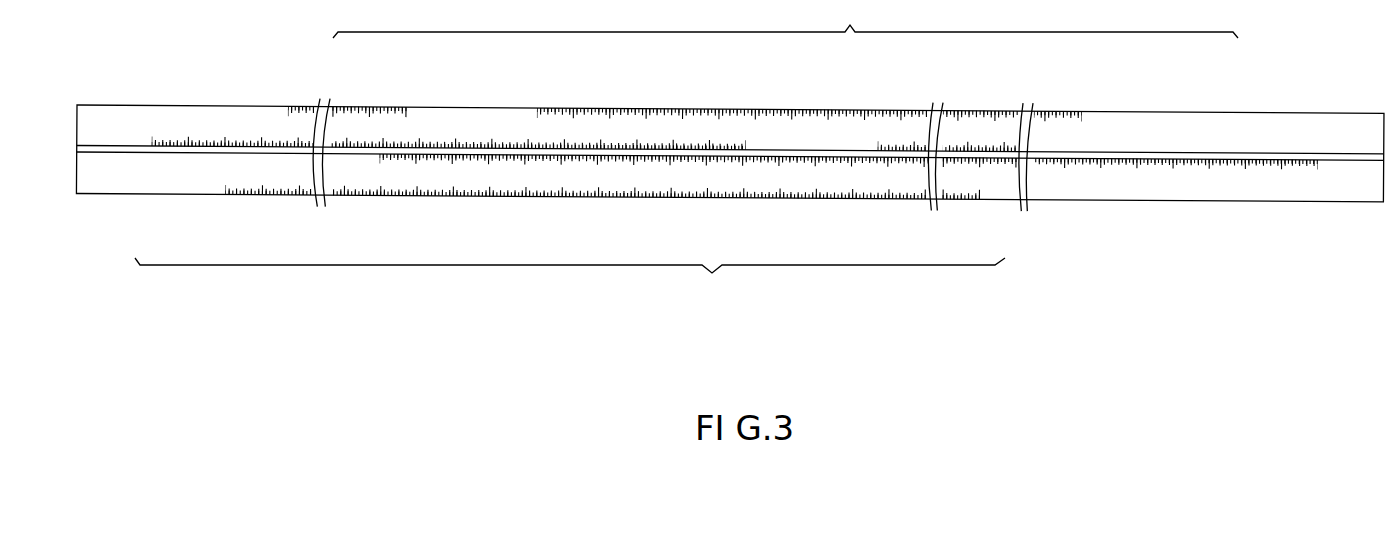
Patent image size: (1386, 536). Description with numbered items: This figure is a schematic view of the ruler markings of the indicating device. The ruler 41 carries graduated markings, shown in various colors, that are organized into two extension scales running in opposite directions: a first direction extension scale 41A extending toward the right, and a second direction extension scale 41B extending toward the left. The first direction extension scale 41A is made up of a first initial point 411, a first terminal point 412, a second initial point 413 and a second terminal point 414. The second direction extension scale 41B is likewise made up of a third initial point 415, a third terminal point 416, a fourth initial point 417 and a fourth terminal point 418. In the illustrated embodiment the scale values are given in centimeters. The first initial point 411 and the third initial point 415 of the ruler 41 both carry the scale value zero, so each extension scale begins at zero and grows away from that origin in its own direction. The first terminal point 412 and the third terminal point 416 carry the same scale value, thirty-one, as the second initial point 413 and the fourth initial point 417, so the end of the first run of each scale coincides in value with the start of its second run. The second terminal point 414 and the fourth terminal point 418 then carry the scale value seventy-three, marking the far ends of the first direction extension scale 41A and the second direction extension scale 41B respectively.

The ruler 41 is at (125, 127).
The first direction extension scale 41A is at (785, 19).
The second direction extension scale 41B is at (570, 282).
The first initial point 411 is at (538, 118).
The first terminal point 412 is at (1082, 118).
The second initial point 413 is at (368, 167).
The second terminal point 414 is at (1318, 158).
The third initial point 415 is at (748, 138).
The third terminal point 416 is at (150, 137).
The fourth initial point 417 is at (983, 188).
The fourth terminal point 418 is at (222, 188).